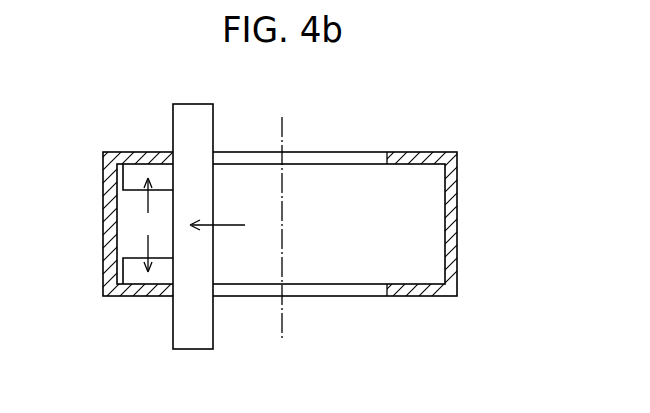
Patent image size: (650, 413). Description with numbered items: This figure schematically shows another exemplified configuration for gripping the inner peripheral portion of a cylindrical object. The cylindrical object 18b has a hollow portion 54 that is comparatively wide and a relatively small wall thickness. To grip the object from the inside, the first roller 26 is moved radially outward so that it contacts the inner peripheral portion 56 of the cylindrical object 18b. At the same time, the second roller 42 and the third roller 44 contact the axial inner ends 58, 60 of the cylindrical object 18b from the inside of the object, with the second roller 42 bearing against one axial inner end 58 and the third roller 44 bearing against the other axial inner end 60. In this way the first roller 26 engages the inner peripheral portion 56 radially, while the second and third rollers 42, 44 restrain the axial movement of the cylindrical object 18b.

The cylindrical object 18b is at (309, 229).
The first roller 26 is at (213, 118).
The second roller 42 is at (130, 196).
The third roller 44 is at (133, 247).
The hollow portion 54 is at (332, 202).
The inner peripheral portion 56 is at (383, 288).
The axial inner end 58 is at (400, 166).
The axial inner end 60 is at (405, 284).